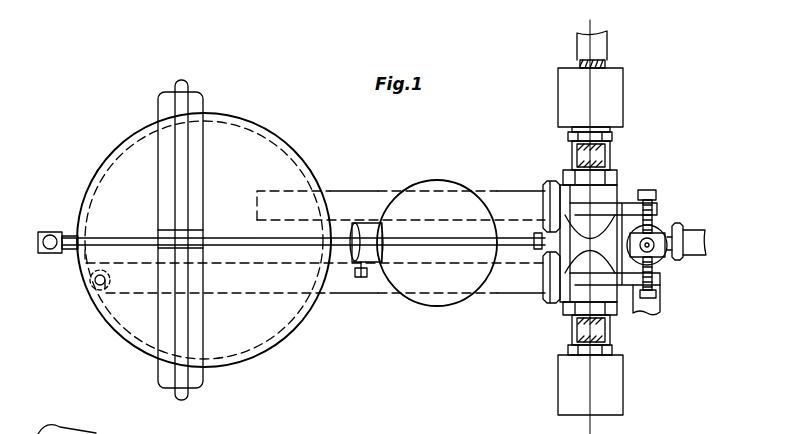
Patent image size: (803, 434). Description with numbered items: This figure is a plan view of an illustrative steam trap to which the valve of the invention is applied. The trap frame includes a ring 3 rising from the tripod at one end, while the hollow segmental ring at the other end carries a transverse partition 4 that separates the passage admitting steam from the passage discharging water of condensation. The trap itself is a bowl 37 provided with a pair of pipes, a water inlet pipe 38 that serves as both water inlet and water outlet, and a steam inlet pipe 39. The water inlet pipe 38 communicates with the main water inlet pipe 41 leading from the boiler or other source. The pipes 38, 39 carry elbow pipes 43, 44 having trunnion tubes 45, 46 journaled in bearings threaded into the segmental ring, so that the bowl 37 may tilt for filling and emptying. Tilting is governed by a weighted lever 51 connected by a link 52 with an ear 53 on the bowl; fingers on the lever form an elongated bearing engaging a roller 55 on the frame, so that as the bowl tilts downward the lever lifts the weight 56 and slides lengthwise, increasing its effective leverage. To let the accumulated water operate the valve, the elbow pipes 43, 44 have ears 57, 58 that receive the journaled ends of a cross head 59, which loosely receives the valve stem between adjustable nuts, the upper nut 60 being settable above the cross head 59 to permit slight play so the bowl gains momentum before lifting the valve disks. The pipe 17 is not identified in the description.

The ring 3 is at (158, 110).
The transverse partition 4 is at (599, 16).
The outlet pipe 17 is at (704, 240).
The bowl 37 is at (280, 336).
The water inlet pipe 38 is at (497, 194).
The steam inlet pipe 39 is at (510, 282).
The main water inlet pipe 41 is at (578, 49).
The elbow pipe 43 is at (604, 197).
The elbow pipe 44 is at (604, 289).
The trunnion tube 45 is at (572, 150).
The trunnion tube 46 is at (600, 328).
The weighted lever 51 is at (116, 238).
The link 52 is at (50, 234).
The ear 53 is at (70, 252).
The roller 55 is at (210, 328).
The weight 56 is at (437, 180).
The ear 57 is at (638, 208).
The ear 58 is at (663, 285).
The cross head 59 is at (656, 237).
The adjustable nut 60 is at (666, 258).